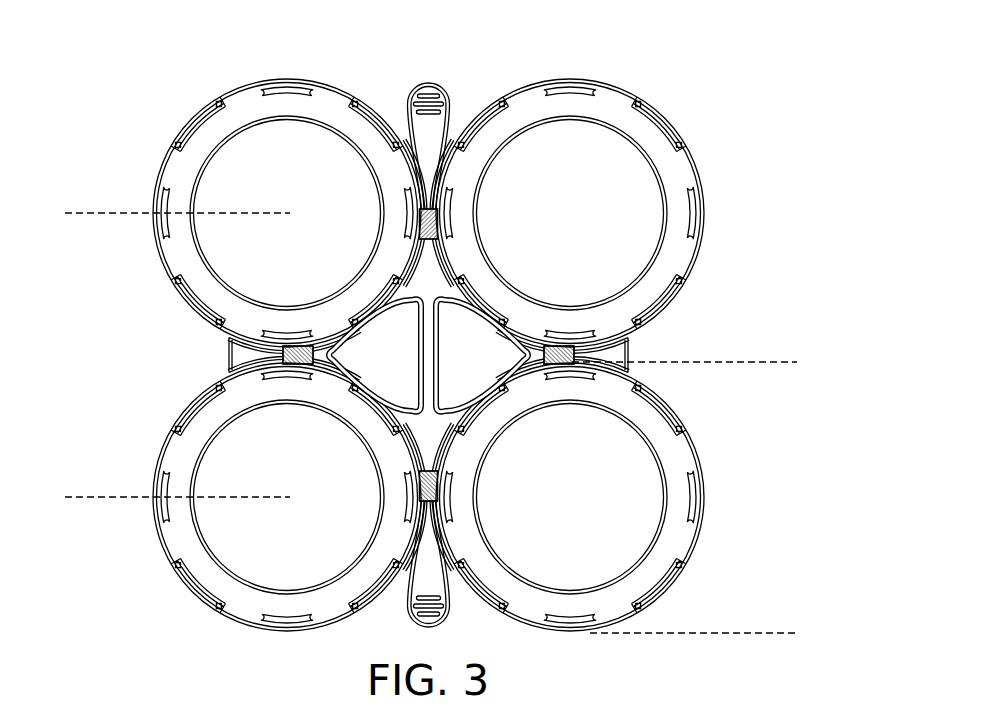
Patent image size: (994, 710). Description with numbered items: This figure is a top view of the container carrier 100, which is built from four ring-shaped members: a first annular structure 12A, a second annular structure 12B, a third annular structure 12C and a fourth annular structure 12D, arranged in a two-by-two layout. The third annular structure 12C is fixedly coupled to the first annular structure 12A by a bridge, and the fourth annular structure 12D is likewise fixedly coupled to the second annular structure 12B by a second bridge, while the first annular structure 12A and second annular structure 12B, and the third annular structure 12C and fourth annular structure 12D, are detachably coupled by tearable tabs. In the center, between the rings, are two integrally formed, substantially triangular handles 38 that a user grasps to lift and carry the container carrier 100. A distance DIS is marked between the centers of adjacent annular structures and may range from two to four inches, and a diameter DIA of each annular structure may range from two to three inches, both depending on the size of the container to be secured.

The container carrier 100 is at (493, 357).
The first annular structure 12A is at (253, 640).
The second annular structure 12B is at (601, 640).
The third annular structure 12C is at (253, 70).
The fourth annular structure 12D is at (601, 70).
The handle 38 is at (413, 377).
The distance DIS is at (64, 530).
The diameter DIA is at (797, 668).